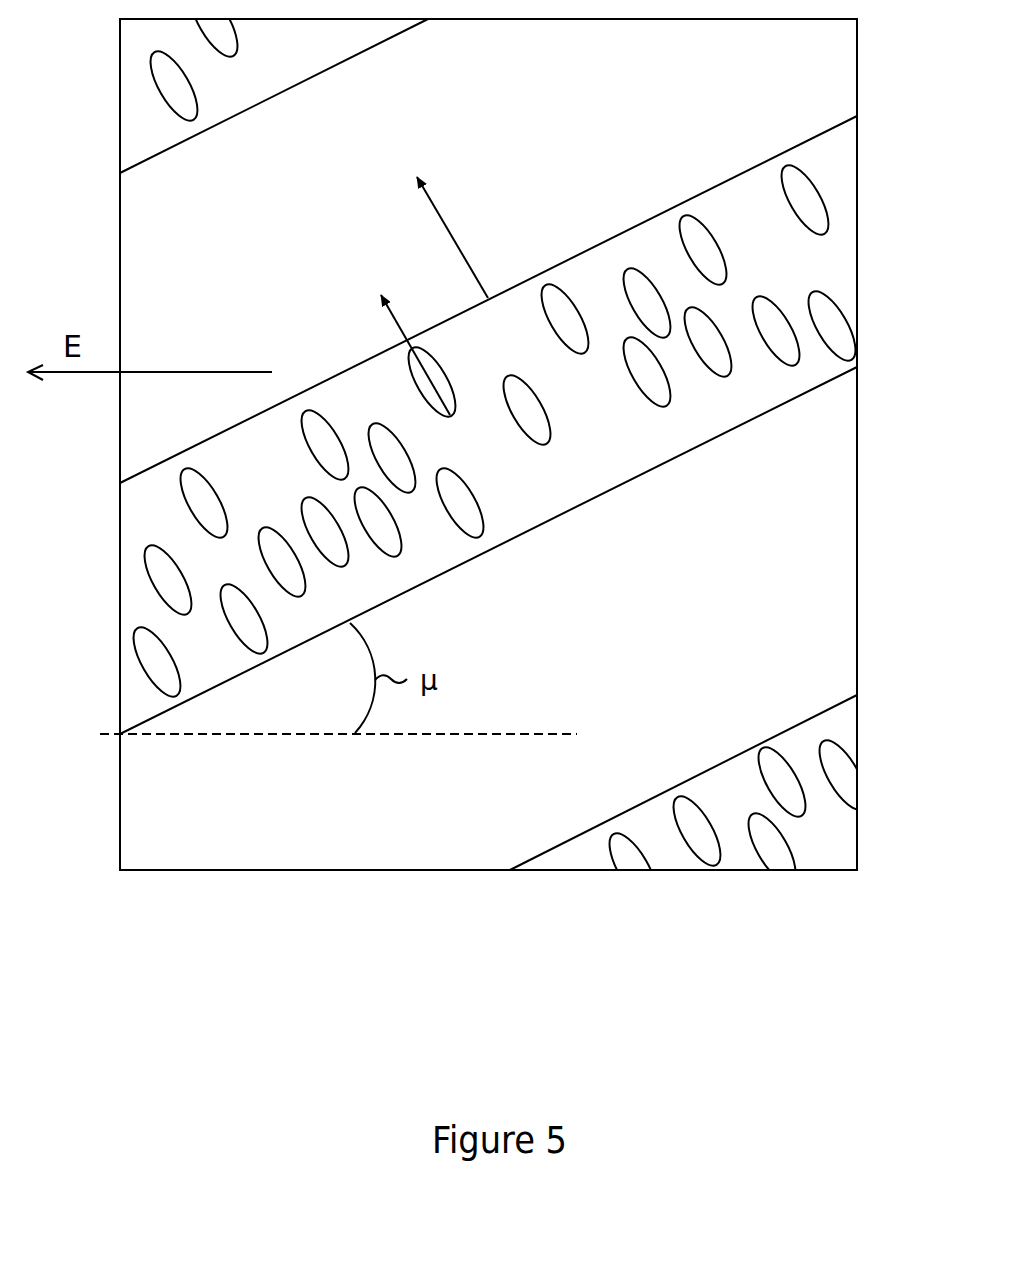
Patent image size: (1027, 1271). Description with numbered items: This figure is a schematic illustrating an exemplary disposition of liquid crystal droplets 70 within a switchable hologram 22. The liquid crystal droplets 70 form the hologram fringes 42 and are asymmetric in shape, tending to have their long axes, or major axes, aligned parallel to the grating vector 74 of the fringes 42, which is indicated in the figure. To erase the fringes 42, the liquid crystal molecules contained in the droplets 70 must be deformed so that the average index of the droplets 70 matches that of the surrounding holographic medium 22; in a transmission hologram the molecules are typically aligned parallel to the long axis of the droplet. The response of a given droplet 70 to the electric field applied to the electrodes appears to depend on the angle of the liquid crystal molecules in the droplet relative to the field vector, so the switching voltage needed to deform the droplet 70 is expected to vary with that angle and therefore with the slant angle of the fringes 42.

The hologram 22 is at (857, 608).
The fringes 42 is at (838, 127).
The liquid crystal droplets 70 is at (848, 351).
The grating vector 74 is at (448, 231).